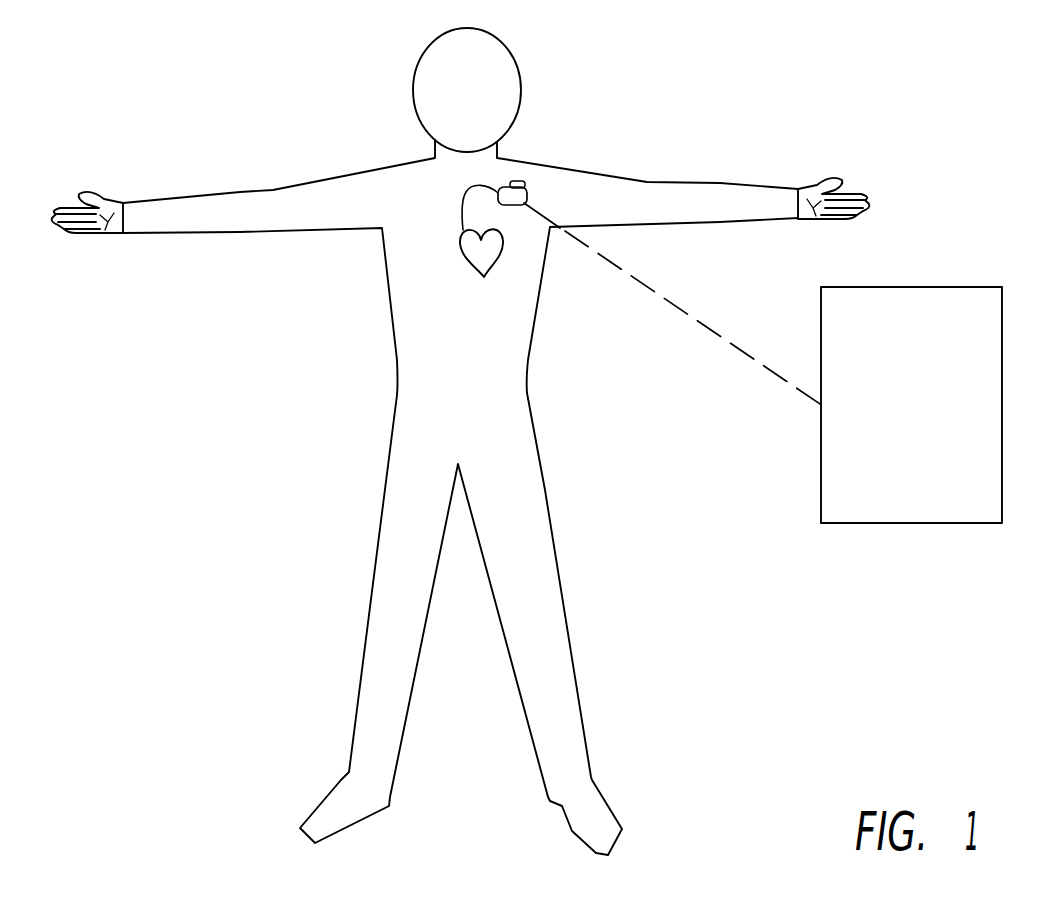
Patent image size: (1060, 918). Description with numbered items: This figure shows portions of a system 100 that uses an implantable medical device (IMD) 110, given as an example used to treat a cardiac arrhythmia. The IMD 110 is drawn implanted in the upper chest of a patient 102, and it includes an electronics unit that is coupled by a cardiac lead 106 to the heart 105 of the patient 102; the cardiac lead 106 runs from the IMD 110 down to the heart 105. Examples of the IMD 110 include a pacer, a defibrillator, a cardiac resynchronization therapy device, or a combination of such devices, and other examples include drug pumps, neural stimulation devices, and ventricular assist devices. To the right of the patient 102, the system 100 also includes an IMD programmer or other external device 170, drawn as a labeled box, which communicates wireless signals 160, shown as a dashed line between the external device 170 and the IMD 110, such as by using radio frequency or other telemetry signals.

The system 100 is at (930, 58).
The patient 102 is at (397, 345).
The heart 105 is at (466, 270).
The lead 106 is at (466, 190).
The implantable medical device 110 is at (530, 193).
The wireless signals 160 is at (682, 313).
The external device 170 is at (1003, 404).